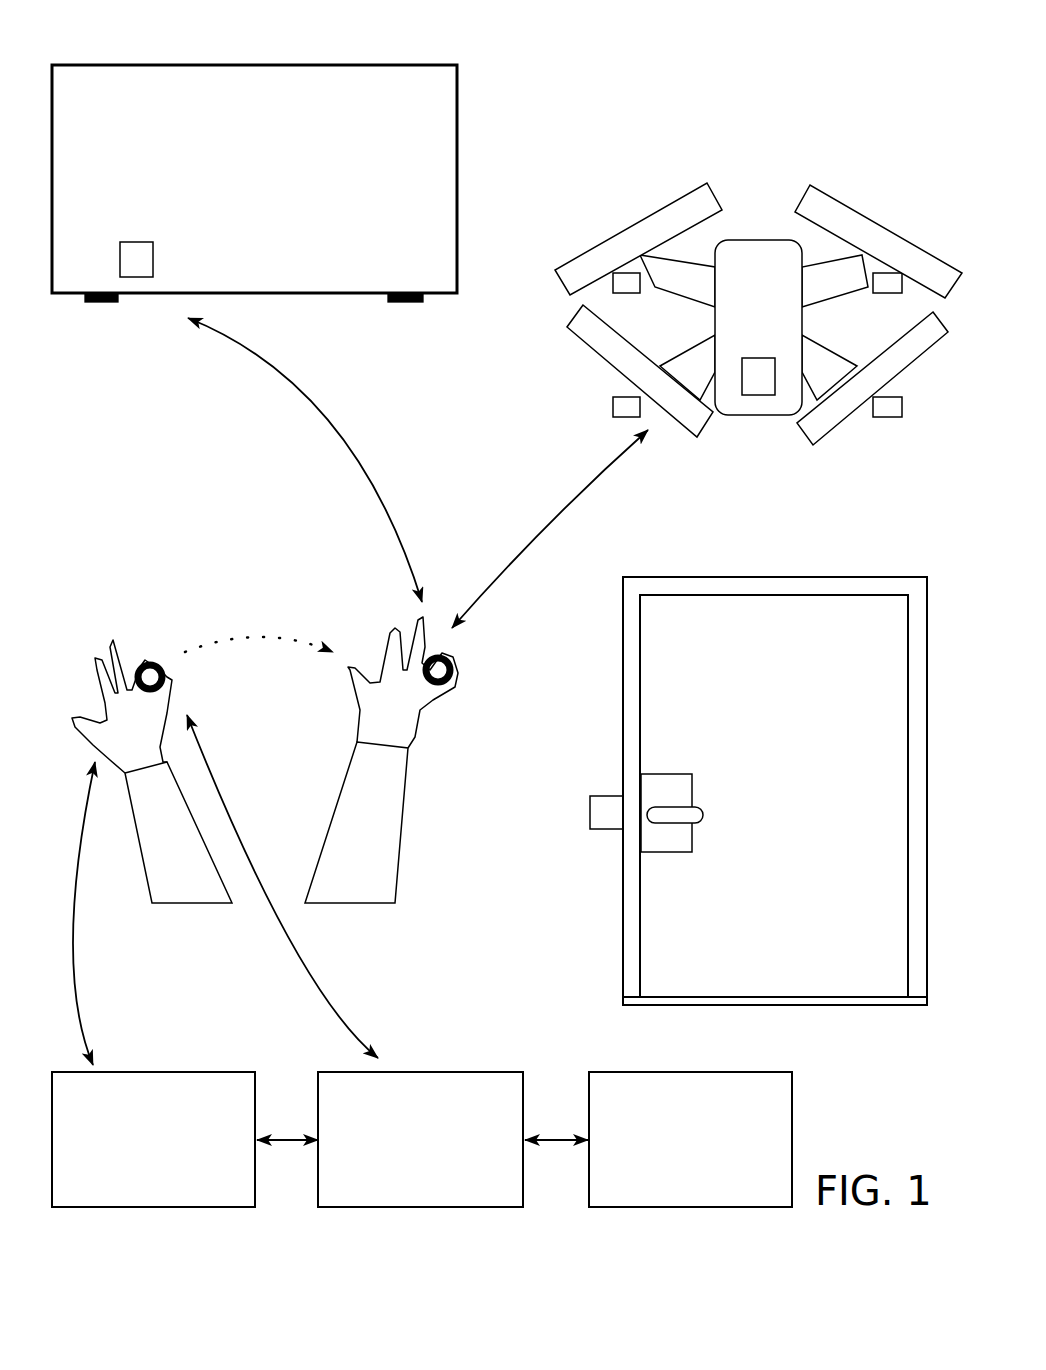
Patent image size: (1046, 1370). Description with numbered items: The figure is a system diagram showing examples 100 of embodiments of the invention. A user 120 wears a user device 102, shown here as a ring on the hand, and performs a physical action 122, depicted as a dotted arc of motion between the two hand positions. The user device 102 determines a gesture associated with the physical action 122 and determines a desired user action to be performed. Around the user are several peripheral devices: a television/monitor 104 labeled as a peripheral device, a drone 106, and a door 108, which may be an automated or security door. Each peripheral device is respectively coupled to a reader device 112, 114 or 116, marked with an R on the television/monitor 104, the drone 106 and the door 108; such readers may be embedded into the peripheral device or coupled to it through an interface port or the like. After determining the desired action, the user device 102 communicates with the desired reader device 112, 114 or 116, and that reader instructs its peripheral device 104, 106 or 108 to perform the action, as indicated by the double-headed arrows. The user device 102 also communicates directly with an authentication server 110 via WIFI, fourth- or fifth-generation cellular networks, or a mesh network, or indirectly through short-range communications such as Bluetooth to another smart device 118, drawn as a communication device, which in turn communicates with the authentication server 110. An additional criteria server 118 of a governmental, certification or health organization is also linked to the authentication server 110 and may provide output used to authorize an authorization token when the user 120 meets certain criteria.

The examples of embodiments 100 is at (752, 98).
The user device 102 is at (155, 660).
The television/monitor 104 is at (388, 65).
The drone 106 is at (835, 193).
The door 108 is at (852, 580).
The authentication server 110 is at (490, 1072).
The reader device 112 is at (133, 277).
The reader device 114 is at (757, 397).
The reader device 116 is at (605, 831).
The smart device / additional criteria server 118 is at (220, 1072).
The user 120 is at (142, 875).
The physical action 122 is at (263, 635).